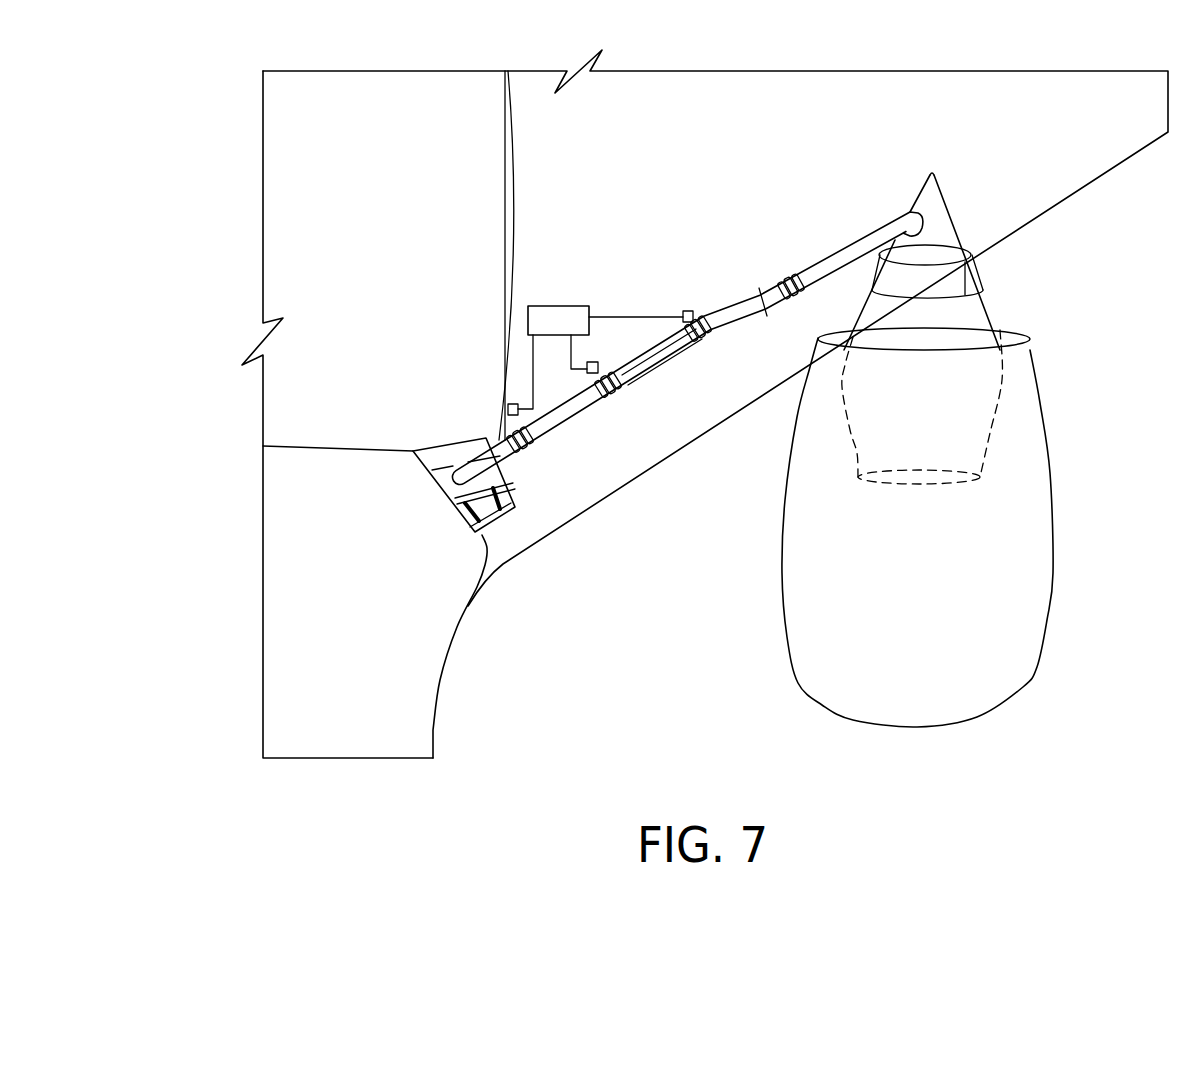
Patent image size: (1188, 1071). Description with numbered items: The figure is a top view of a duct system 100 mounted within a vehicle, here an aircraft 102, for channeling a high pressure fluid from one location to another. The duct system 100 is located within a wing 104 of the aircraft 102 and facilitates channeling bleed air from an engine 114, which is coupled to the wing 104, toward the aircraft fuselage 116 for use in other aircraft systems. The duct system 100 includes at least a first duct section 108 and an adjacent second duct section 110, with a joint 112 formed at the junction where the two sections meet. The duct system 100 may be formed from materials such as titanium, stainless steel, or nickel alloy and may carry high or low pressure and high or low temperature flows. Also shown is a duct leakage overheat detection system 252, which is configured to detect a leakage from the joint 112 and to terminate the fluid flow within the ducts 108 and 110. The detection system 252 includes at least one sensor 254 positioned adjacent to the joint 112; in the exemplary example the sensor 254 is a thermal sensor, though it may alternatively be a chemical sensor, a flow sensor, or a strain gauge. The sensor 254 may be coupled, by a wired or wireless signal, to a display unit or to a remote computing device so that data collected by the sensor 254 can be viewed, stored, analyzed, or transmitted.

The duct system 100 is at (687, 372).
The aircraft 102 is at (236, 104).
The wing 104 is at (717, 110).
The first duct section 108 is at (563, 422).
The second duct section 110 is at (673, 357).
The joint 112 is at (612, 393).
The engine 114 is at (977, 315).
The aircraft fuselage 116 is at (390, 687).
The duct leakage overheat detection system 252 is at (538, 306).
The sensor 254 is at (593, 362).